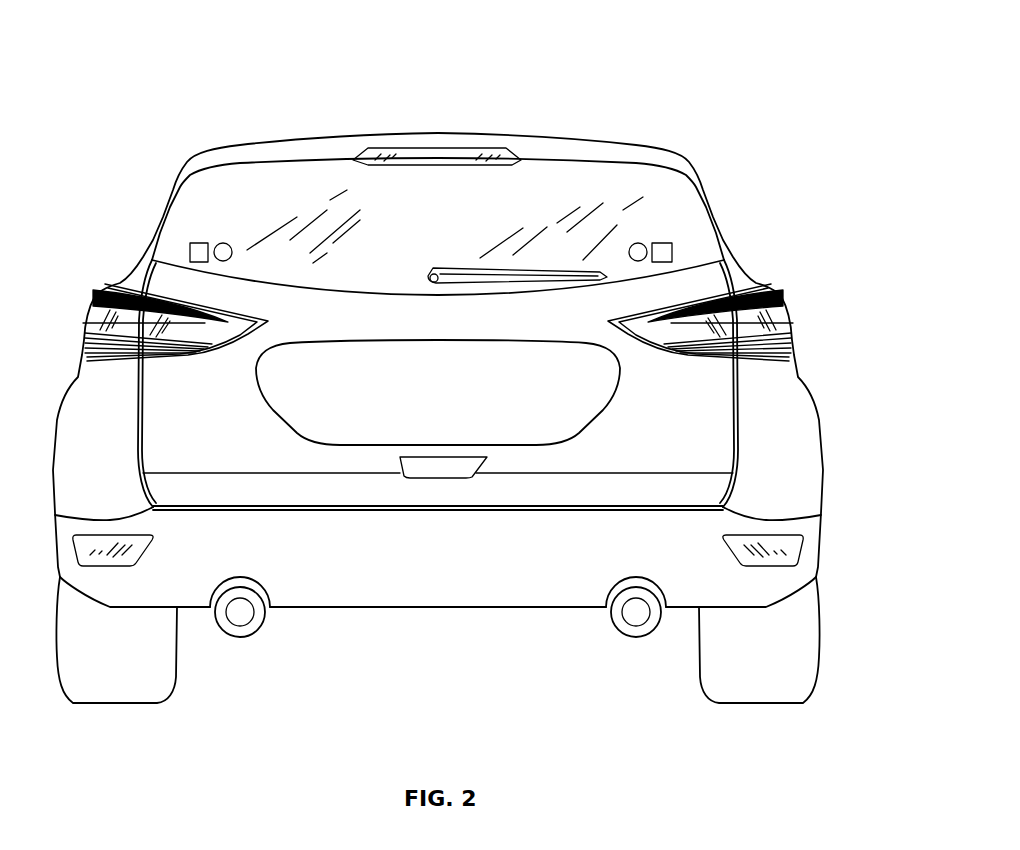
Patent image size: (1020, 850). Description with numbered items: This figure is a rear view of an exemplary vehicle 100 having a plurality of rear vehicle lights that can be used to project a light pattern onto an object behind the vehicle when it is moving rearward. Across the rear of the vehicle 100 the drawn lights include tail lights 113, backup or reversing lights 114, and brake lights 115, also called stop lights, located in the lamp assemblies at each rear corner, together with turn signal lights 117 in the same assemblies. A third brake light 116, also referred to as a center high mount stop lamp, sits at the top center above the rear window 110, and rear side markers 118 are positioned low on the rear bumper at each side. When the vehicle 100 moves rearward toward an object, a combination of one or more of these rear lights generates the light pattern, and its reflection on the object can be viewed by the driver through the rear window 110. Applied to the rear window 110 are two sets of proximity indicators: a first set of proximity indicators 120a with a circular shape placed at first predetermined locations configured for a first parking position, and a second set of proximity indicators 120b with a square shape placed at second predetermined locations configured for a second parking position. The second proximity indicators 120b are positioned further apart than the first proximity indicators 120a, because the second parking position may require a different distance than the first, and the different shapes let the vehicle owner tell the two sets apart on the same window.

The vehicle 100 is at (672, 45).
The rear window 110 is at (233, 181).
The tail lights 113 is at (193, 350).
The backup or reversing lights 114 is at (93, 345).
The brake lights 115 is at (103, 290).
The third brake light 116 is at (440, 147).
The turn signal lights 117 is at (95, 313).
The rear side markers 118 is at (143, 550).
The first set of proximity indicators 120a is at (226, 243).
The second set of proximity indicators 120b is at (198, 242).